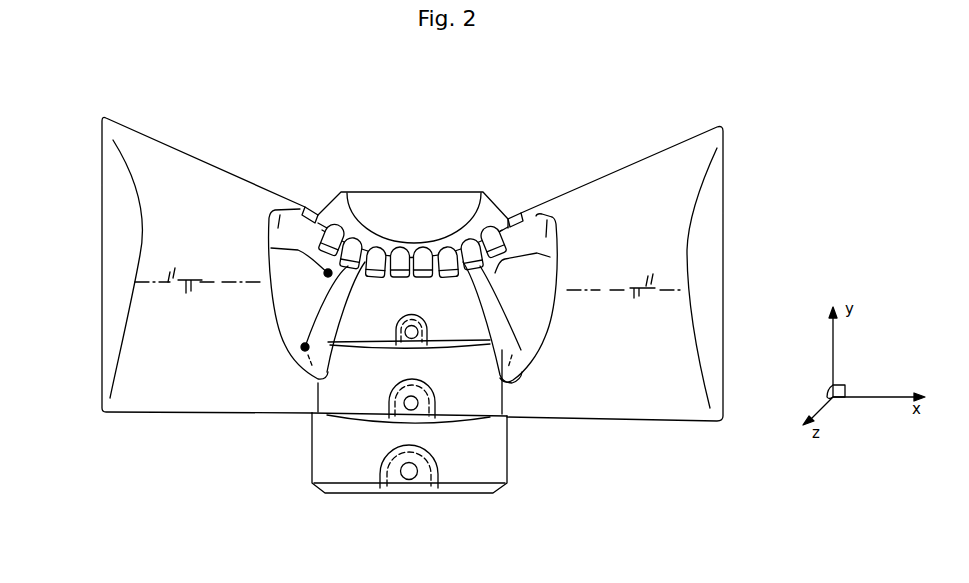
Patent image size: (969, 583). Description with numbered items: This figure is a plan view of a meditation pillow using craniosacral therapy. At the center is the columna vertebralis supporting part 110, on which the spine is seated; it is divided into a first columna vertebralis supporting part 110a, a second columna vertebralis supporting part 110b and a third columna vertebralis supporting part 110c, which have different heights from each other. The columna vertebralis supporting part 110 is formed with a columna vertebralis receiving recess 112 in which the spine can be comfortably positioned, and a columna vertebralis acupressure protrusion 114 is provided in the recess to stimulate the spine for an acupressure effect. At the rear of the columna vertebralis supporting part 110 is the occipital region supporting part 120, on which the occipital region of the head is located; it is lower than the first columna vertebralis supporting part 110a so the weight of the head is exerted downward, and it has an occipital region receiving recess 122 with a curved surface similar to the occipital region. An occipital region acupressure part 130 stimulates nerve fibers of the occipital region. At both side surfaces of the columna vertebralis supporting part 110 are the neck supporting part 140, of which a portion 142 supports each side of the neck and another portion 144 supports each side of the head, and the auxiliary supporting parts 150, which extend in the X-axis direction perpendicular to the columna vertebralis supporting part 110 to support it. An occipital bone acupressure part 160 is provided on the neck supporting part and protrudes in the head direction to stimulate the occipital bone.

The columna vertebralis supporting part 110 is at (494, 437).
The first columna vertebralis supporting part 110a is at (485, 387).
The second columna vertebralis supporting part 110b is at (488, 395).
The third columna vertebralis supporting part 110c is at (452, 486).
The columna vertebralis receiving recess 112 is at (395, 482).
The columna vertebralis acupressure protrusion 114 is at (414, 473).
The occipital region supporting part 120 is at (490, 207).
The occipital region receiving recess 122 is at (410, 203).
The occipital region acupressure part 130 is at (423, 195).
The neck supporting part 140 is at (292, 310).
The portion of the neck supporting part 142 is at (305, 347).
The another portion of the neck supporting part 144 is at (328, 273).
The auxiliary supporting part 150 is at (165, 407).
The occipital bone acupressure part 160 is at (523, 312).